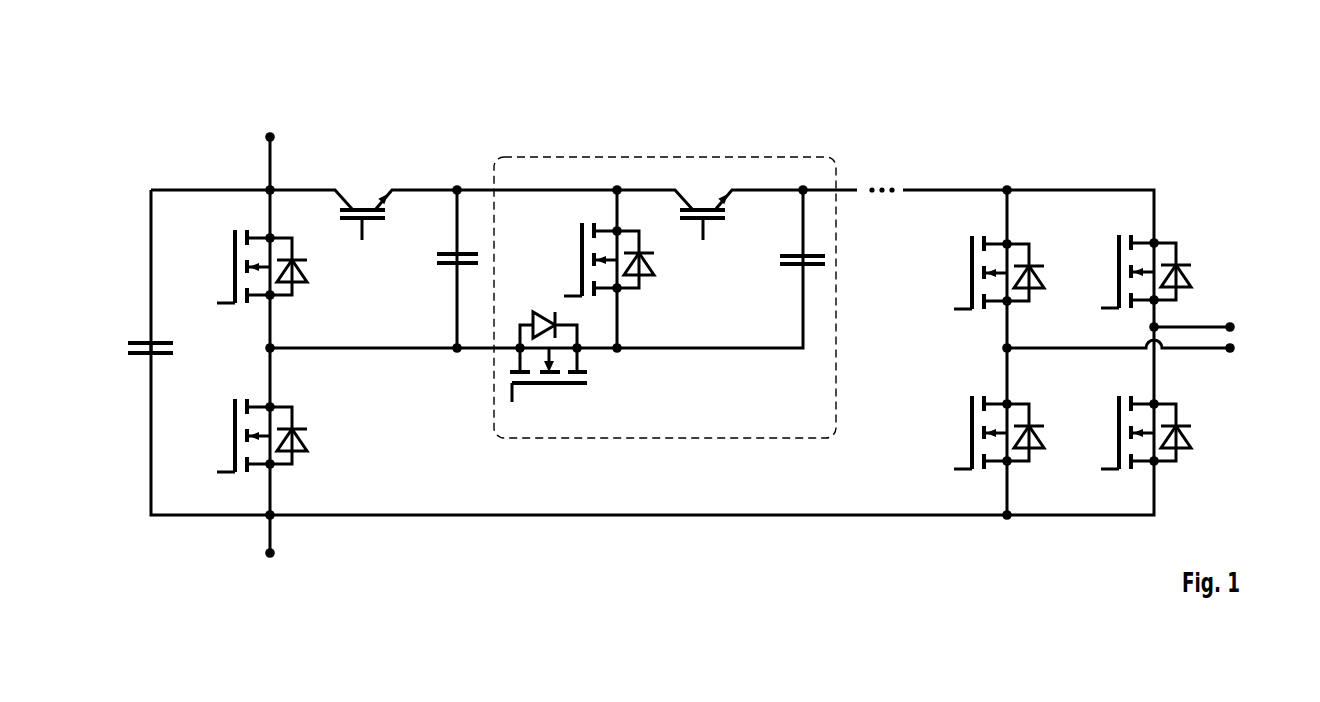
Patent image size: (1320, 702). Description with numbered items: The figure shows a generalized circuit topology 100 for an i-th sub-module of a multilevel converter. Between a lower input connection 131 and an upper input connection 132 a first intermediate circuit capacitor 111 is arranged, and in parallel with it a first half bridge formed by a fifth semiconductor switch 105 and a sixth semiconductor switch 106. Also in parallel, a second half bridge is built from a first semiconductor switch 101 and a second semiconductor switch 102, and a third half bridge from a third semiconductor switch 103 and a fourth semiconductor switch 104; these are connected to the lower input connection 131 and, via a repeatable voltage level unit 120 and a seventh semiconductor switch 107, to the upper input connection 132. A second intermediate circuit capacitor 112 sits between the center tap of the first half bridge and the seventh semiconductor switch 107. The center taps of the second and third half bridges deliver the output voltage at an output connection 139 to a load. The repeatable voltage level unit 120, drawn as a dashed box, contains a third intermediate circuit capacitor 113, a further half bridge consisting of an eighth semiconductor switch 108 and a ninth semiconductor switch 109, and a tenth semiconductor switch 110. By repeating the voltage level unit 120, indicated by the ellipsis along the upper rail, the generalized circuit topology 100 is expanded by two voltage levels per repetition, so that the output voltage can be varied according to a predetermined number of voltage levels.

The generalized circuit topology 100 is at (310, 93).
The first semiconductor switch 101 is at (972, 264).
The second semiconductor switch 102 is at (971, 421).
The third semiconductor switch 103 is at (1178, 250).
The fourth semiconductor switch 104 is at (1183, 417).
The fifth semiconductor switch 105 is at (235, 260).
The sixth semiconductor switch 106 is at (300, 455).
The seventh semiconductor switch 107 is at (372, 222).
The eighth semiconductor switch 108 is at (578, 358).
The ninth semiconductor switch 109 is at (580, 231).
The tenth semiconductor switch 110 is at (710, 220).
The first intermediate circuit capacitor 111 is at (141, 355).
The second intermediate circuit capacitor 112 is at (443, 266).
The third intermediate circuit capacitor 113 is at (793, 267).
The repeatable voltage level unit 120 is at (758, 157).
The lower input connection 131 is at (278, 556).
The upper input connection 132 is at (267, 137).
The output connection 139 is at (1236, 306).